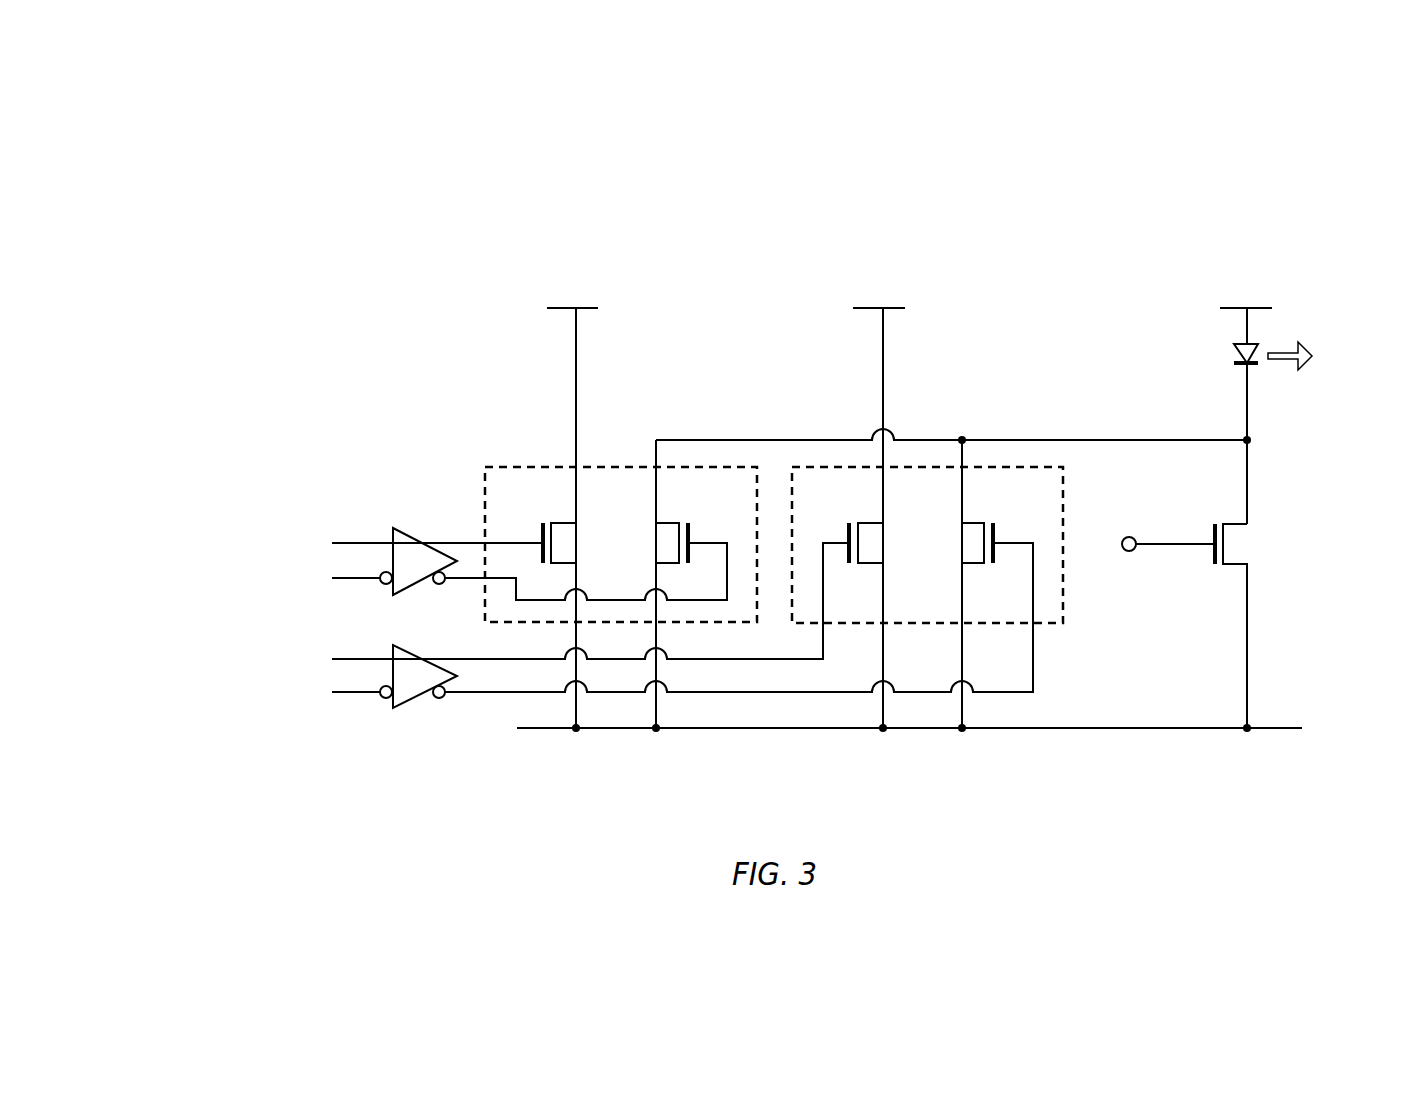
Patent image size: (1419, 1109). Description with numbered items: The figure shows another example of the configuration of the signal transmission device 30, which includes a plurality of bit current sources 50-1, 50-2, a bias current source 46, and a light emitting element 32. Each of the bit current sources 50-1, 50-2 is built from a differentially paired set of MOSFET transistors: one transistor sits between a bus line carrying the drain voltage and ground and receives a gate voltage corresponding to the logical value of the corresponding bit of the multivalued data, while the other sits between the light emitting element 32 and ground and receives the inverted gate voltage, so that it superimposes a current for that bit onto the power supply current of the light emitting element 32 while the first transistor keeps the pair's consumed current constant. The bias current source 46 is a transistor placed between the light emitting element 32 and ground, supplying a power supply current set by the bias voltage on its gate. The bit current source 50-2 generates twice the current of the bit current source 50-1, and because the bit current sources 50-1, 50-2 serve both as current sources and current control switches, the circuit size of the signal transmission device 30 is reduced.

The signal transmission device 30 is at (1238, 231).
The bit current source 50-1 is at (533, 466).
The bit current source 50-2 is at (1049, 627).
The light emitting element 32 is at (1236, 349).
The bias current source 46 is at (1238, 568).